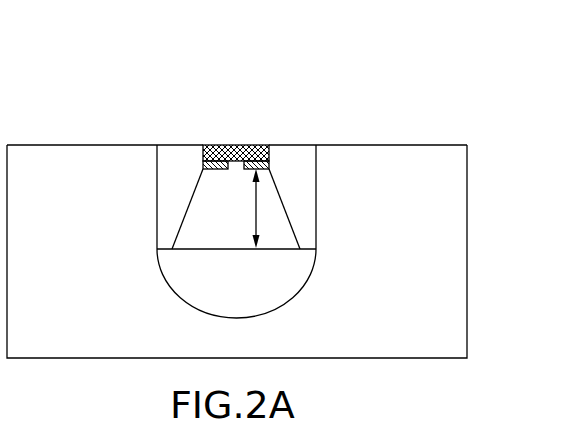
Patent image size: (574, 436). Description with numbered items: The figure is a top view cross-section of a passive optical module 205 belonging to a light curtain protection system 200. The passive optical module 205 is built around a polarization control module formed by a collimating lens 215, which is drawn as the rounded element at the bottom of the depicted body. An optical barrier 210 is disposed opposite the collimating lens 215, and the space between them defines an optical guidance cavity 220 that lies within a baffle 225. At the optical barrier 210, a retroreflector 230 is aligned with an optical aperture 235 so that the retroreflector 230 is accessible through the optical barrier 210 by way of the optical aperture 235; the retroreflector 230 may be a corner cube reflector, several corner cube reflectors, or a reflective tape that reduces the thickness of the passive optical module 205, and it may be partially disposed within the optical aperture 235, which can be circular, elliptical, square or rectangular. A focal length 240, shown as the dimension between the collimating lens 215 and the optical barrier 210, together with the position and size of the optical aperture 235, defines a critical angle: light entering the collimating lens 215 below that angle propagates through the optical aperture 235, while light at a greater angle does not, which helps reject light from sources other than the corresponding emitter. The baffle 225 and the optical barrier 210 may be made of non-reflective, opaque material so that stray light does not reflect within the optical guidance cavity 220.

The light curtain protection system 200 is at (460, 80).
The passive optical module 205 is at (468, 249).
The optical barrier 210 is at (274, 158).
The collimating lens 215 is at (300, 291).
The optical guidance cavity 220 is at (216, 212).
The baffle 225 is at (316, 185).
The retroreflector 230 is at (219, 148).
The optical aperture 235 is at (240, 152).
The focal length 240 is at (257, 208).